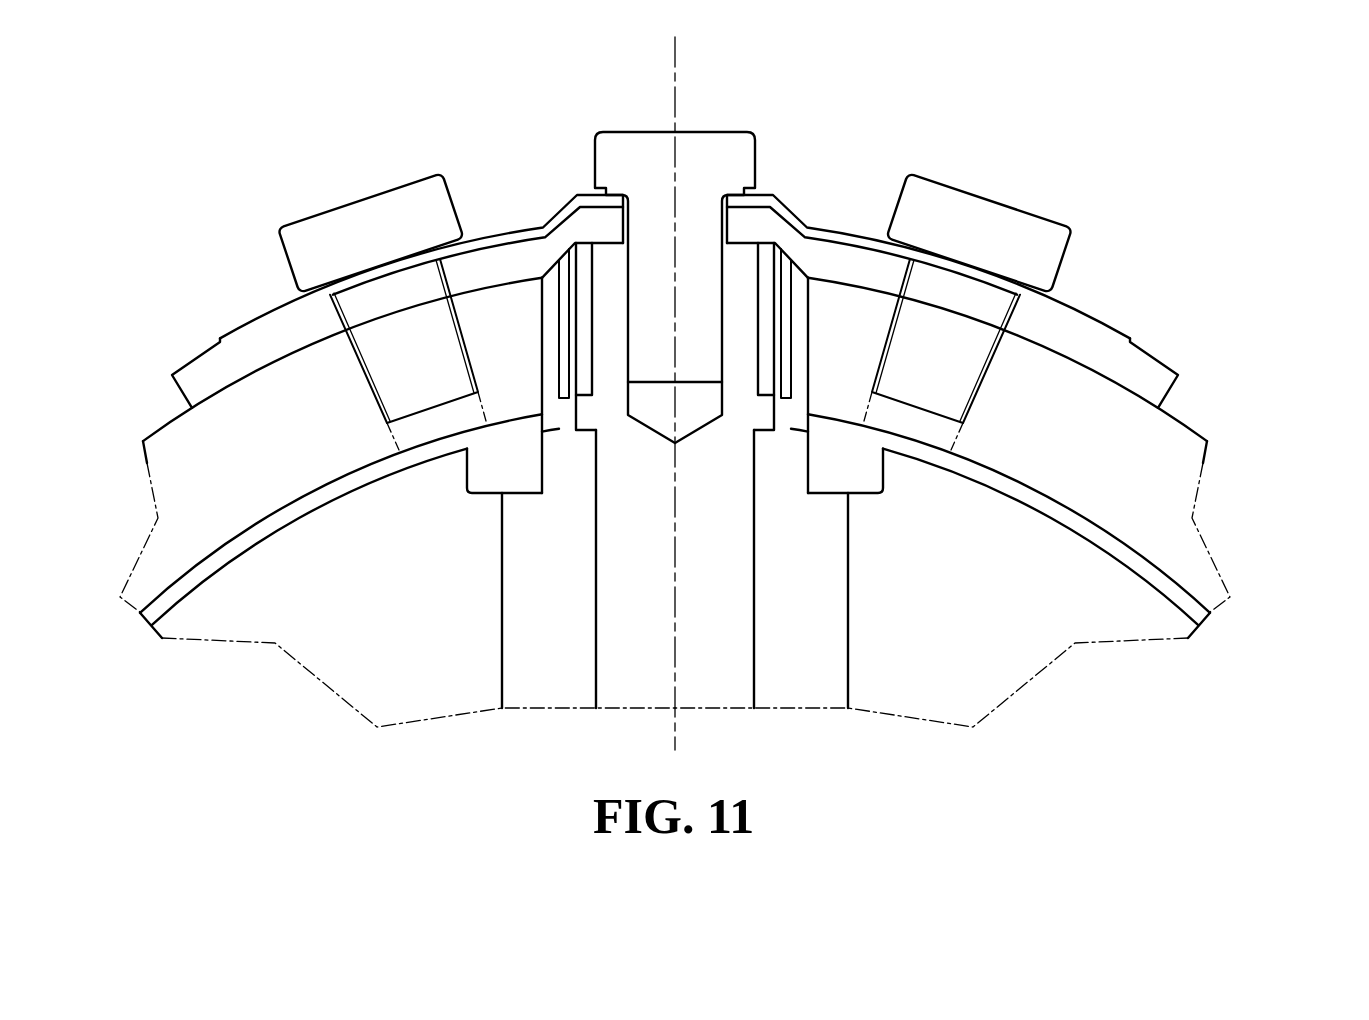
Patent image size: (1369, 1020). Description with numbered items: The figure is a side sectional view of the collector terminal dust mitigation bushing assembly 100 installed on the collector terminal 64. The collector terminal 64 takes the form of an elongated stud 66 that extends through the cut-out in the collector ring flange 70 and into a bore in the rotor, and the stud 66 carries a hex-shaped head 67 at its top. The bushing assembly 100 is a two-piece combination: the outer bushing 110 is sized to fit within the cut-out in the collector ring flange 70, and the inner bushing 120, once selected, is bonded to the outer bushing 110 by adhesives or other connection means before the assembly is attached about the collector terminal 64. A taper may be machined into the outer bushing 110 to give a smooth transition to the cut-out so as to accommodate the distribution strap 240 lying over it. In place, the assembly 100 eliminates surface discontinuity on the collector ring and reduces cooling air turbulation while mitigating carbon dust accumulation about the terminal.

The collector ring flange 70 is at (1183, 424).
The collector terminal 64 is at (489, 605).
The elongated stud 66 is at (584, 679).
The hex-shaped head 67 is at (743, 248).
The collector terminal dust mitigation bushing assembly 100 is at (821, 300).
The outer bushing 110 is at (808, 380).
The inner bushing 120 is at (775, 398).
The distribution strap 240 is at (1143, 353).